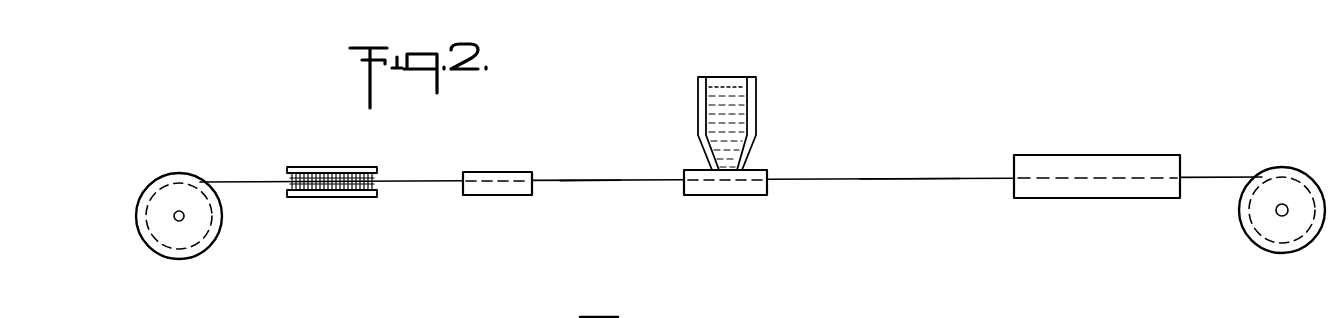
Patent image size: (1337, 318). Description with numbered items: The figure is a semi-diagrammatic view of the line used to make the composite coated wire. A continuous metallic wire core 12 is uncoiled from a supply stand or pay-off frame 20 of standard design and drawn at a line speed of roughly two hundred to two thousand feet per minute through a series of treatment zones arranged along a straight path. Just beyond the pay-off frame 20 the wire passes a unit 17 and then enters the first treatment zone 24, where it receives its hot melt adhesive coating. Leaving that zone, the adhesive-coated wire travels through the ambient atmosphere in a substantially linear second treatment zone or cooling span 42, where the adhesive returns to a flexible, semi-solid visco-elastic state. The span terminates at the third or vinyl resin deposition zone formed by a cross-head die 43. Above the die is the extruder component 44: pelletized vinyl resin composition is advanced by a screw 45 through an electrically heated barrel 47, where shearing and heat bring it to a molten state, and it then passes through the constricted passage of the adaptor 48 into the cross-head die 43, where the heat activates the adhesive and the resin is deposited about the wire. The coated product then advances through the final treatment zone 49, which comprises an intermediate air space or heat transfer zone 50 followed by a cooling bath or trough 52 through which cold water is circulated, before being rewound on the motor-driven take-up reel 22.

The metallic wire core 12 is at (243, 180).
The heating/guide unit 17 is at (346, 169).
The pay-off frame 20 is at (171, 177).
The take-up reel 22 is at (1278, 172).
The first treatment zone 24 is at (498, 172).
The second treatment zone 42 is at (598, 181).
The cross-head die 43 is at (716, 196).
The reservoir 44 is at (757, 100).
The screw 45 is at (727, 100).
The barrel 47 is at (751, 120).
The adaptor 48 is at (745, 165).
The final treatment zone 49 is at (898, 180).
The heat transfer zone 50 is at (1013, 178).
The cooling bath 52 is at (1098, 155).